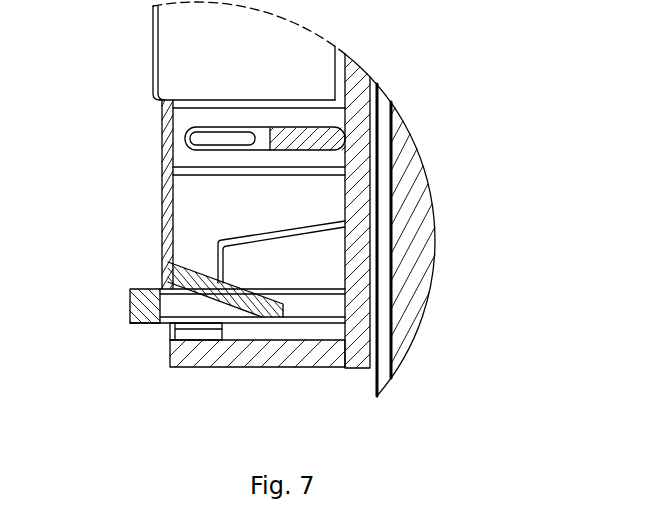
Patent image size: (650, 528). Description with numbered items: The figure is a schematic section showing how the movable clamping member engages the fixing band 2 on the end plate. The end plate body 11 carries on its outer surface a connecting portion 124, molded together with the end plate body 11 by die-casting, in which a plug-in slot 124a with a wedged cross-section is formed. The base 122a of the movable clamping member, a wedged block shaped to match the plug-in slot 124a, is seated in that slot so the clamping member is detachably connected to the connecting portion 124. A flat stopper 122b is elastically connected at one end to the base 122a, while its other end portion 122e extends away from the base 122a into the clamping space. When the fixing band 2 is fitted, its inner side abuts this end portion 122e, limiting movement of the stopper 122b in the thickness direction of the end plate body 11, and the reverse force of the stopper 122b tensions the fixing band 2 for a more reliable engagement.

The fixing band 2 is at (160, 200).
The end plate body 11 is at (308, 367).
The base 122a is at (142, 323).
The stopper 122b is at (222, 284).
The end portion 122e is at (166, 274).
The connecting portion 124 is at (393, 238).
The plug-in slot 124a is at (388, 330).